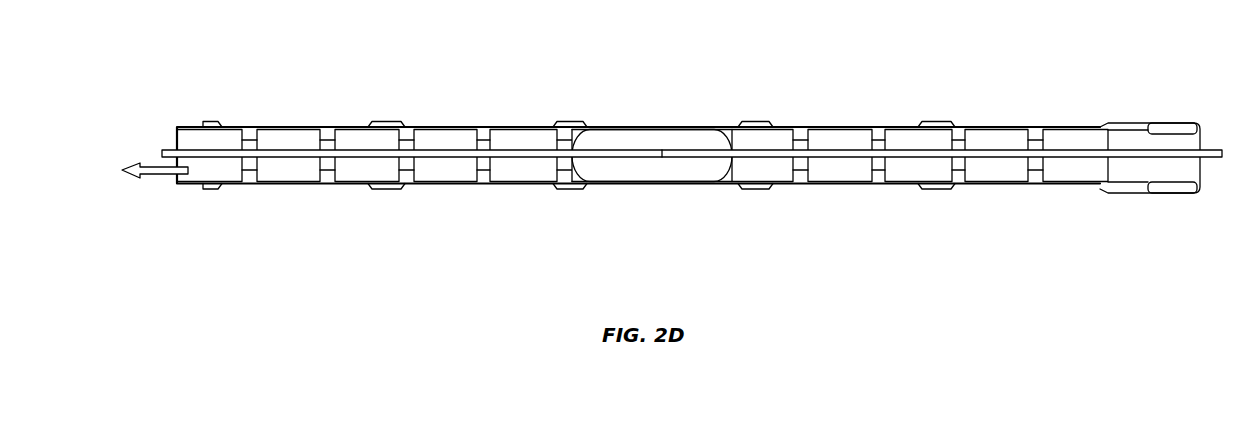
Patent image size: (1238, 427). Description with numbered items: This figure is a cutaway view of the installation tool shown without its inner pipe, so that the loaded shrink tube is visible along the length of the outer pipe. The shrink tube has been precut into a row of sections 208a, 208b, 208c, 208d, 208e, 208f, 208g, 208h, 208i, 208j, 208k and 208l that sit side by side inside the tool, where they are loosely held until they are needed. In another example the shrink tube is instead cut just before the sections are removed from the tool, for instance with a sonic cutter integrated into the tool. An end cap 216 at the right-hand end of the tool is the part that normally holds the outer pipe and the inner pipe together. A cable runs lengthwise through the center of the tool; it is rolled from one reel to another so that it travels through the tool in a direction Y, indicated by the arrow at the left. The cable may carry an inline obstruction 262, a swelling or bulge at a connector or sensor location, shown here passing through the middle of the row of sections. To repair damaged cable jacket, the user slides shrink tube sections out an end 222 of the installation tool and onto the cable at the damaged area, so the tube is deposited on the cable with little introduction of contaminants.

The shrink tube section 208a is at (190, 127).
The shrink tube section 208b is at (292, 135).
The shrink tube section 208c is at (355, 135).
The shrink tube section 208d is at (453, 135).
The shrink tube section 208e is at (520, 135).
The shrink tube section 208f is at (575, 130).
The shrink tube section 208g is at (708, 127).
The shrink tube section 208h is at (782, 135).
The shrink tube section 208i is at (843, 135).
The shrink tube section 208j is at (932, 135).
The shrink tube section 208k is at (1002, 135).
The shrink tube section 208l is at (1068, 135).
The end cap 216 is at (1163, 123).
The end of the installation tool 222 is at (182, 183).
The inline obstruction 262 is at (637, 170).
The direction of cable movement Y is at (152, 177).